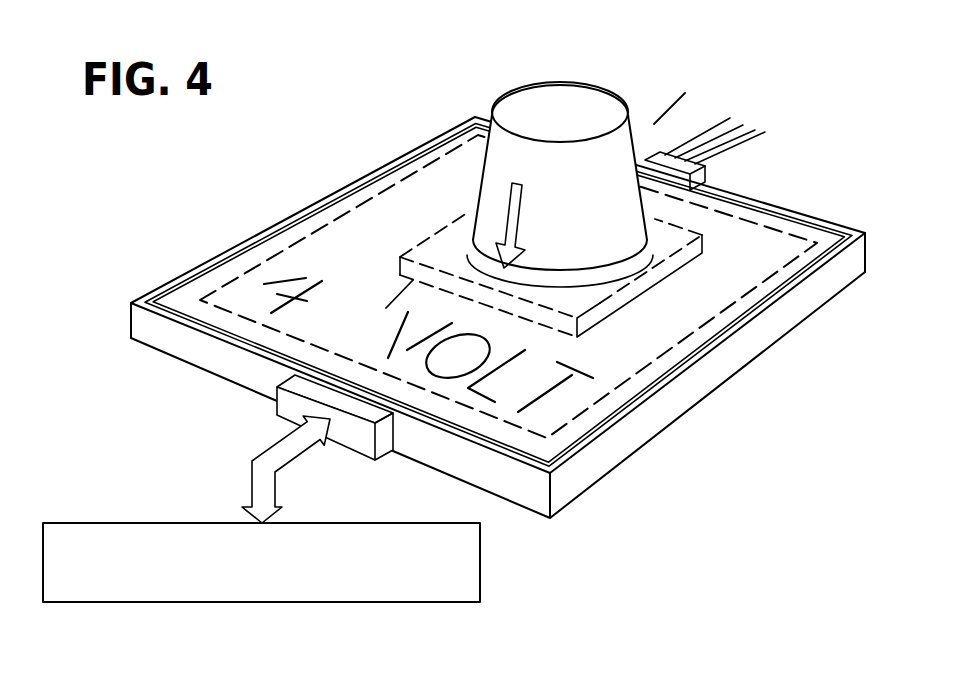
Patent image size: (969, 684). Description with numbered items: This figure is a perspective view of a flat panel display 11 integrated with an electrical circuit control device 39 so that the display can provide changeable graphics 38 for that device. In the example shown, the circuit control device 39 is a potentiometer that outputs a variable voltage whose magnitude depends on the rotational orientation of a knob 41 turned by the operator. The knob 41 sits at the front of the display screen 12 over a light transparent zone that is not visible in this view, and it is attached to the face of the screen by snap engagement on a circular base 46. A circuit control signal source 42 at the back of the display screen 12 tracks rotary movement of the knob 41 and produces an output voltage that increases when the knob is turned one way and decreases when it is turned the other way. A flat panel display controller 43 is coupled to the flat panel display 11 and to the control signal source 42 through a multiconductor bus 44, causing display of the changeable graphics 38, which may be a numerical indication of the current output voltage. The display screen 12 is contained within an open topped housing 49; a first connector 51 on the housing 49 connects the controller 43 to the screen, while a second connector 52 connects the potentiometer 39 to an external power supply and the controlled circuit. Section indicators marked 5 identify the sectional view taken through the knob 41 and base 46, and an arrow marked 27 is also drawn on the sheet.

The section line 5- 5 is at (684, 93).
The flat panel display 11 is at (203, 200).
The display screen 12 is at (392, 212).
The display border 27 is at (662, 358).
The changeable graphics 38 is at (582, 392).
The electrical circuit control device 39 is at (462, 98).
The knob 41 is at (598, 193).
The circuit control signal source 42 is at (676, 278).
The flat panel display controller 43 is at (483, 553).
The multiconductor bus 44 is at (290, 465).
The circular base 46 is at (578, 283).
The open topped housing 49 is at (657, 438).
The first connector 51 is at (288, 415).
The second connector 52 is at (708, 170).